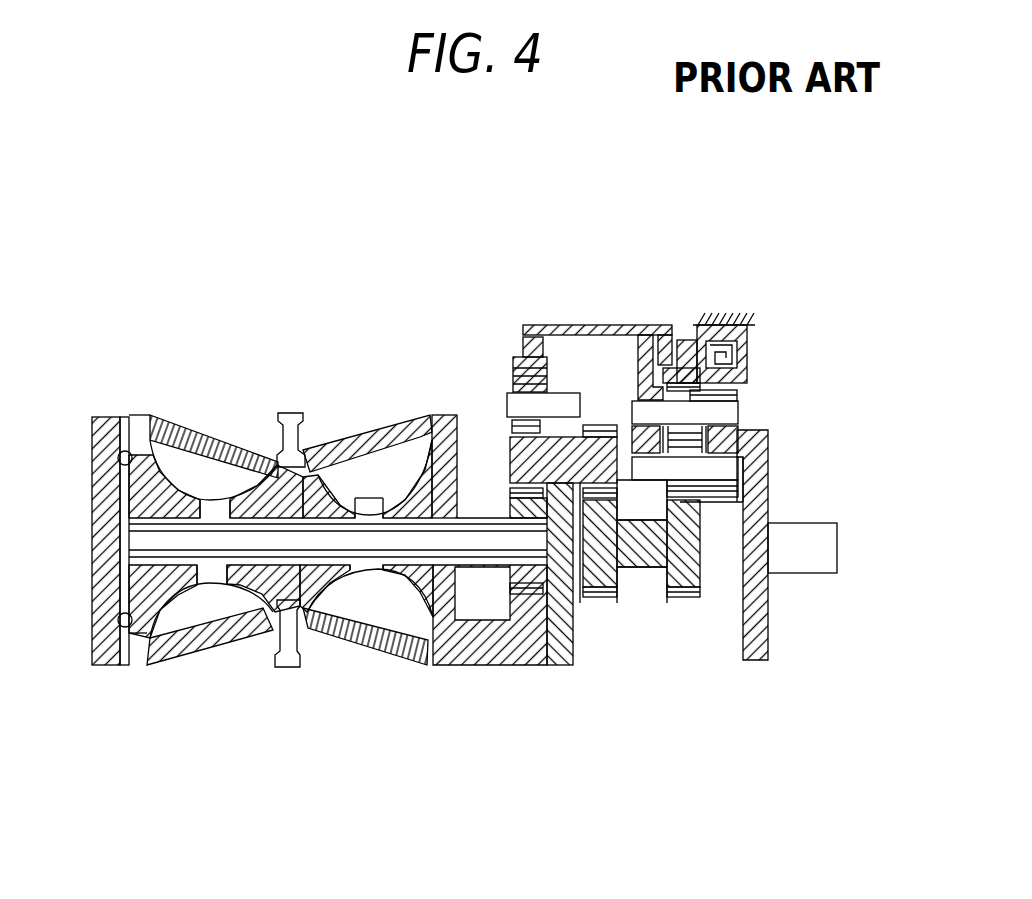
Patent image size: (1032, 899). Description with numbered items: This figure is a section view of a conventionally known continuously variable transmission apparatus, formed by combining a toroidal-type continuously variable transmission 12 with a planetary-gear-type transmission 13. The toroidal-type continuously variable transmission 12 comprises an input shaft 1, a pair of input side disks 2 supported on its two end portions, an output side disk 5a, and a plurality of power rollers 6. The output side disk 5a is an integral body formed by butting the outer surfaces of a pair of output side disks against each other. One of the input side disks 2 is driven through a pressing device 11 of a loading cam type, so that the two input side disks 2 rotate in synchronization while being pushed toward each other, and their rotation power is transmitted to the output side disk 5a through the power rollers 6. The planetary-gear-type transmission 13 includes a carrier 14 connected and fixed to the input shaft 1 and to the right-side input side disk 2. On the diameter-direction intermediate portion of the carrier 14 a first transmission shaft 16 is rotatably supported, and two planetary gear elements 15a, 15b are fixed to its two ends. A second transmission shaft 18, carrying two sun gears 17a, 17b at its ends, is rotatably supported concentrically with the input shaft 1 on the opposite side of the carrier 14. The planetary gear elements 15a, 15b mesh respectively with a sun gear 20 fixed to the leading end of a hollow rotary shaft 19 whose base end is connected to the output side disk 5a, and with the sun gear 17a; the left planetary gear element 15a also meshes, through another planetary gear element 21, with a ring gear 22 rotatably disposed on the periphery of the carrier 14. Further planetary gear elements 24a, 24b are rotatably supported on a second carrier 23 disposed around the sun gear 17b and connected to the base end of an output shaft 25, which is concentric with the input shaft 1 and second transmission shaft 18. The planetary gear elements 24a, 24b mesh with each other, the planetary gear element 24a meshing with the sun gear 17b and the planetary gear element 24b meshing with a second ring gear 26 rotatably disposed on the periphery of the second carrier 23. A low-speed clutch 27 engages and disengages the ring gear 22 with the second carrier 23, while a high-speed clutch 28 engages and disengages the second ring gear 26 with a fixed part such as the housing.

The input shaft 1 is at (125, 585).
The input side disks 2 is at (130, 450).
The output side disk 5a is at (292, 414).
The power rollers 6 is at (197, 425).
The pressing device 11 is at (93, 420).
The toroidal-type continuously variable transmission 12 is at (249, 352).
The planetary-gear-type transmission 13 is at (710, 655).
The carrier 14 is at (593, 455).
The planetary gear element 15a is at (505, 432).
The planetary gear element 15b is at (637, 375).
The first transmission shaft 16 is at (560, 625).
The sun gear 17a is at (590, 597).
The sun gear 17b is at (675, 597).
The second transmission shaft 18 is at (637, 567).
The hollow rotary shaft 19 is at (470, 600).
The sun gear 20 is at (510, 596).
The planetary gear element 21 is at (515, 392).
The ring gear 22 is at (555, 325).
The second carrier 23 is at (753, 430).
The planetary gear element 24a is at (768, 492).
The planetary gear element 24b is at (750, 360).
The output shaft 25 is at (800, 545).
The second ring gear 26 is at (692, 322).
The low-speed clutch 27 is at (655, 350).
The high-speed clutch 28 is at (745, 326).